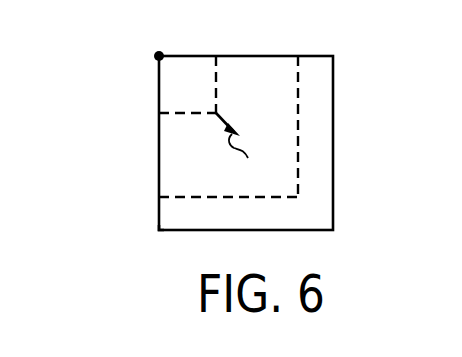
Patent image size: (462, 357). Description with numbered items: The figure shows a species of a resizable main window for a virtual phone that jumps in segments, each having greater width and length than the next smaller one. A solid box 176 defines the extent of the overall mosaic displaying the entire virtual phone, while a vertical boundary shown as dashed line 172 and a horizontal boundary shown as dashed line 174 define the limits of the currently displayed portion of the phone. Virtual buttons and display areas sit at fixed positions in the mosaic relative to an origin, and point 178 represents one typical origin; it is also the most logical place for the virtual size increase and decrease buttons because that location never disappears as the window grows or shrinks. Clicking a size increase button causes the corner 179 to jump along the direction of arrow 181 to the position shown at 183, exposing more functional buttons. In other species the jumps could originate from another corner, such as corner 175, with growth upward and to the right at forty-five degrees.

The dashed line 172 is at (172, 118).
The dashed line 174 is at (216, 83).
The corner 175 is at (159, 232).
The solid box 176 is at (334, 168).
The point 178 is at (157, 52).
The corner 179 is at (218, 110).
The arrow 181 is at (260, 161).
The position 183 is at (298, 197).